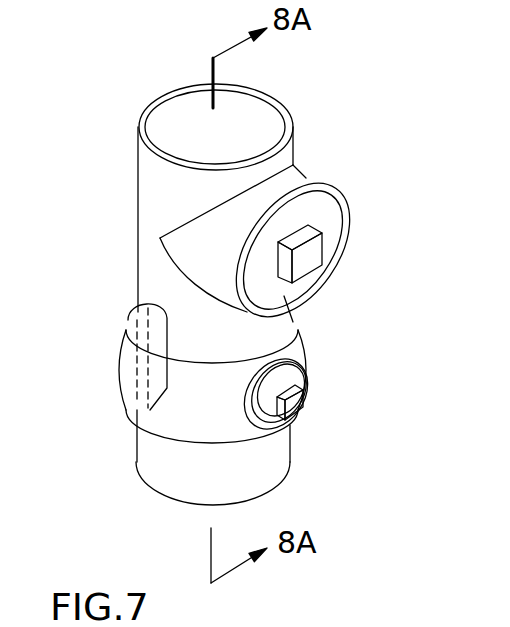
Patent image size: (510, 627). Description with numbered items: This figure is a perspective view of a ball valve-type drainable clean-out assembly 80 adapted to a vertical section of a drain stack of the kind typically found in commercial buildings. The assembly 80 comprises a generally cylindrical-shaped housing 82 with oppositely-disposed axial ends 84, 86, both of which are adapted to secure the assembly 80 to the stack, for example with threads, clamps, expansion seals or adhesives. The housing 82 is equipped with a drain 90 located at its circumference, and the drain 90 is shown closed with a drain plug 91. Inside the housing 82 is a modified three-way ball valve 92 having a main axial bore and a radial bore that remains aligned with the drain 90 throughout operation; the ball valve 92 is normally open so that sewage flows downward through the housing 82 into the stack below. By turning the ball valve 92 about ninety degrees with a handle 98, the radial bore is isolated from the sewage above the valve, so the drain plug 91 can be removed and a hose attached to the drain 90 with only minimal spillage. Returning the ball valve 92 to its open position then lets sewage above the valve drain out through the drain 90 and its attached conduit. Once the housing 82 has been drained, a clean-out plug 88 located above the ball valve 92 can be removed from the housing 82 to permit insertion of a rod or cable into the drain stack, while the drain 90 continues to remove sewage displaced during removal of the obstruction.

The ball valve-type clean-out assembly 80 is at (325, 57).
The housing 82 is at (148, 260).
The axial end 84 is at (288, 148).
The axial end 86 is at (278, 460).
The clean-out plug 88 is at (325, 207).
The drain 90 is at (298, 380).
The drain plug 91 is at (298, 407).
The ball valve 92 is at (172, 414).
The handle 98 is at (122, 362).